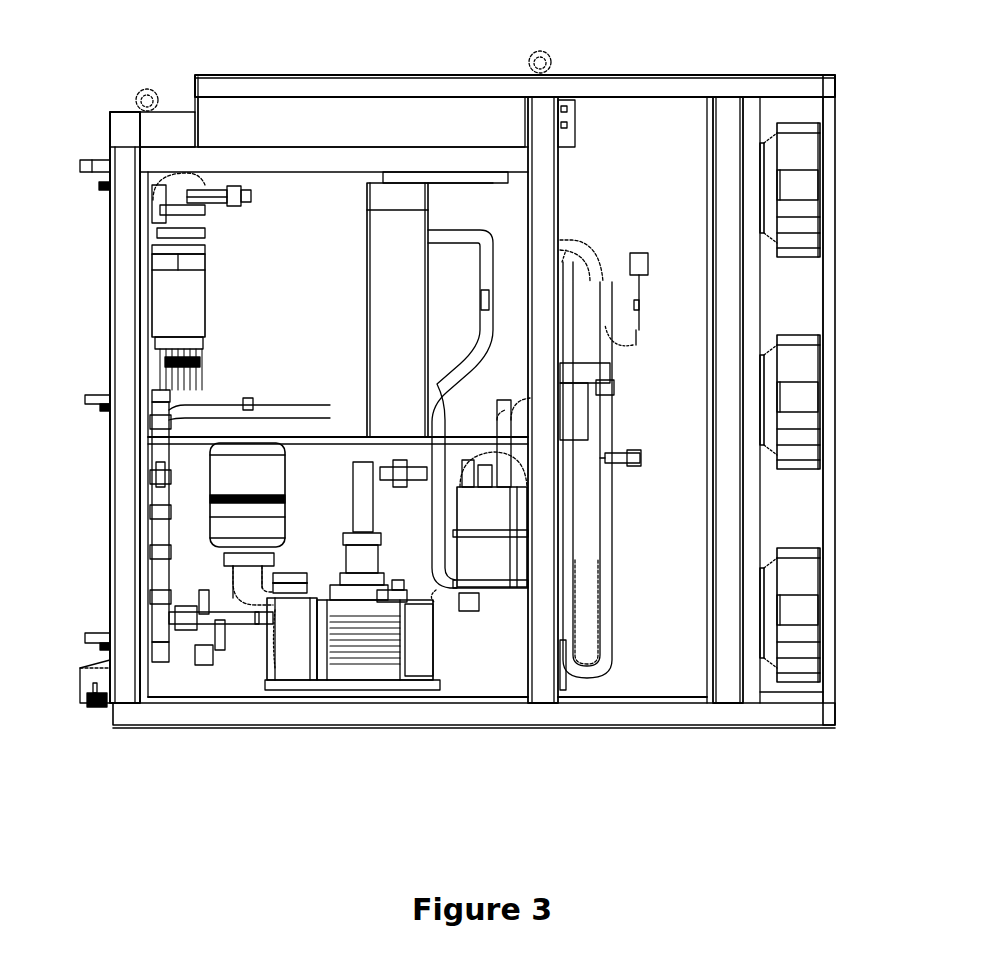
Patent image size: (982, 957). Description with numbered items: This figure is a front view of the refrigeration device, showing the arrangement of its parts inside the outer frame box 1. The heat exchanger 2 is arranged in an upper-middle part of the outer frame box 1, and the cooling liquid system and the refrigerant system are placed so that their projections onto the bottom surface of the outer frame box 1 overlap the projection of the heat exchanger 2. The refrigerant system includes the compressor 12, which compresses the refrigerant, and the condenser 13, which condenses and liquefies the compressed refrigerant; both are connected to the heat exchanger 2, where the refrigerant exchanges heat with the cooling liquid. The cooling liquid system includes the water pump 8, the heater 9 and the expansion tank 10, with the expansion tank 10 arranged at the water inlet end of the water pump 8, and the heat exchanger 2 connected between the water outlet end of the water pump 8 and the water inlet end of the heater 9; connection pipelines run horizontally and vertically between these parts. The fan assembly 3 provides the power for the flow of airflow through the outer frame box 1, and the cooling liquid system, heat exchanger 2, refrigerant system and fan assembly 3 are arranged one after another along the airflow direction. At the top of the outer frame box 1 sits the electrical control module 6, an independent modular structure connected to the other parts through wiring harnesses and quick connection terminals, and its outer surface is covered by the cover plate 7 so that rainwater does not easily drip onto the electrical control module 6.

The outer frame box 1 is at (130, 590).
The heat exchanger 2 is at (395, 305).
The fan assembly 3 is at (797, 372).
The electrical control module 6 is at (272, 120).
The cover plate 7 is at (468, 88).
The water pump 8 is at (365, 652).
The heater 9 is at (168, 295).
The expansion tank 10 is at (243, 484).
The compressor 12 is at (490, 614).
The condenser 13 is at (622, 578).